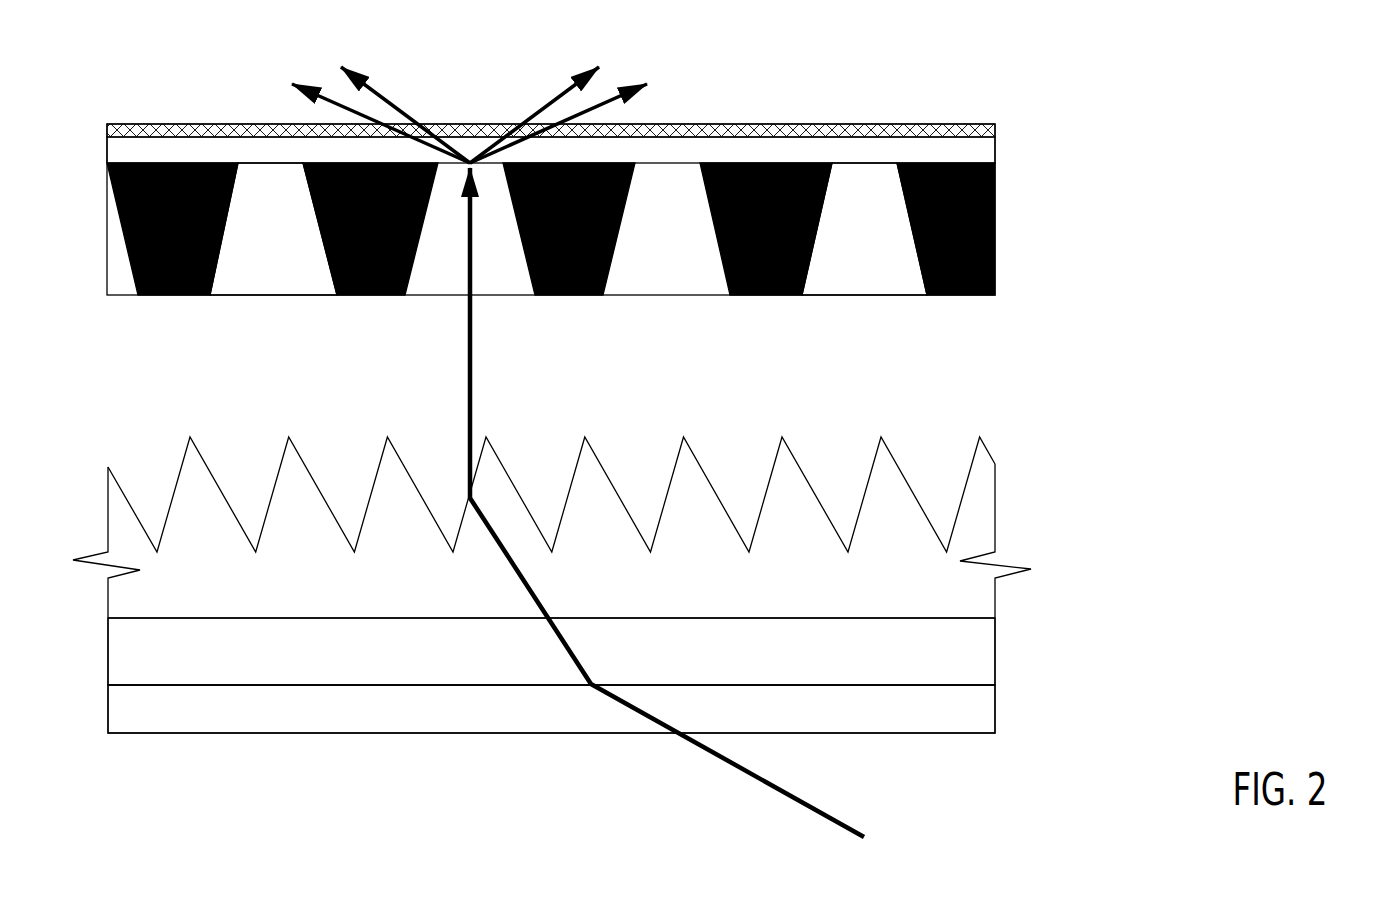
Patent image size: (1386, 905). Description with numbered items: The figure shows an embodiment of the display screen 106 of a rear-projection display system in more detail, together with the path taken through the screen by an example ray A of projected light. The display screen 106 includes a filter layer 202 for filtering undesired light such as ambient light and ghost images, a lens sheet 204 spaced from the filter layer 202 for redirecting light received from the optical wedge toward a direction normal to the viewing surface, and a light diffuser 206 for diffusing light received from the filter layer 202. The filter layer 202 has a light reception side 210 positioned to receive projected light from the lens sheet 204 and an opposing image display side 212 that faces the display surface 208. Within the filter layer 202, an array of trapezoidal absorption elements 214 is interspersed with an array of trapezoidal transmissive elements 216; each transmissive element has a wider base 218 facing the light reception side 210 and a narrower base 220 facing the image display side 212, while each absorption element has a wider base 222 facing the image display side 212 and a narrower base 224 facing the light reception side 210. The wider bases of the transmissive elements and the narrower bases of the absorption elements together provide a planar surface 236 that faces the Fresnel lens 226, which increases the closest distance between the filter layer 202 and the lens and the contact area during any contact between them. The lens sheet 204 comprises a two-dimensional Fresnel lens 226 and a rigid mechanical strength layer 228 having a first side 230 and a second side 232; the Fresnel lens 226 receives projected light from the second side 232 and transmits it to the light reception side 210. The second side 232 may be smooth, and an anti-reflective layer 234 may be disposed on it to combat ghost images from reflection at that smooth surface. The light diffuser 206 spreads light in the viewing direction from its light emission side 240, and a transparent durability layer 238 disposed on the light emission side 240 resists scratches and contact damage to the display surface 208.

The display screen 106 is at (1252, 376).
The filter layer 202 is at (653, 228).
The lens sheet 204 is at (640, 620).
The light diffuser 206 is at (653, 108).
The display surface 208 is at (564, 95).
The light reception side 210 is at (981, 321).
The image display side 212 is at (971, 154).
The trapezoidal absorption elements 214 is at (551, 228).
The trapezoidal transmissive elements 216 is at (292, 273).
The wider base 218 is at (863, 298).
The narrower base 220 is at (863, 162).
The wider base 222 is at (757, 162).
The narrower base 224 is at (765, 298).
The Fresnel lens 226 is at (305, 507).
The rigid mechanical strength layer 228 is at (952, 653).
The first side 230 is at (353, 619).
The second side 232 is at (453, 686).
The anti-reflective layer 234 is at (895, 703).
The planar surface 236 is at (931, 346).
The transparent durability layer 238 is at (564, 95).
The light emission side 240 is at (924, 120).
The ray A is at (686, 745).